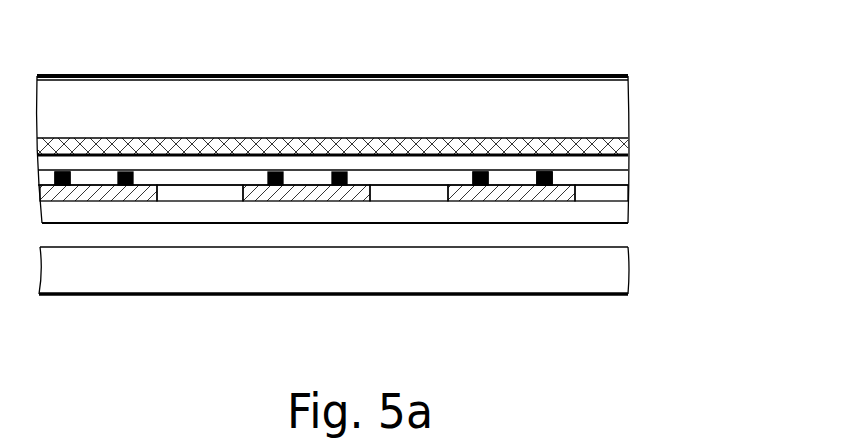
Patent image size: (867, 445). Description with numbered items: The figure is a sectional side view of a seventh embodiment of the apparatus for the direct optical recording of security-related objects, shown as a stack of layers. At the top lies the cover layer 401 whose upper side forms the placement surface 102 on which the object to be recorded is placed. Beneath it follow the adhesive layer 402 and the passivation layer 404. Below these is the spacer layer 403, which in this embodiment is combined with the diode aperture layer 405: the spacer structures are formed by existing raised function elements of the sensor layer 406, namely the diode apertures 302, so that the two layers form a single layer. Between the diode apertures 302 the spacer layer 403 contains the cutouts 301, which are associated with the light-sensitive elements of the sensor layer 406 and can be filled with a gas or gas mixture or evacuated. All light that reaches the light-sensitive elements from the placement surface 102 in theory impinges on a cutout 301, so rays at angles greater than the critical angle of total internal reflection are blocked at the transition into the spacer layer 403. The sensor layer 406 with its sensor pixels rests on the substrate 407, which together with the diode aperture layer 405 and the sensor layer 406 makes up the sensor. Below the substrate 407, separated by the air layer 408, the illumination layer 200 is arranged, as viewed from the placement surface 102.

The placement surface 102 is at (617, 75).
The illumination layer 200 is at (600, 272).
The cutout 301 is at (500, 180).
The diode aperture 302 is at (553, 183).
The cover layer 401 is at (628, 97).
The adhesive layer 402 is at (600, 110).
The spacer layer 403 is at (600, 180).
The passivation layer 404 is at (600, 163).
The diode aperture layer 405 is at (303, 178).
The sensor layer 406 is at (600, 193).
The substrate 407 is at (600, 210).
The air layer 408 is at (600, 233).